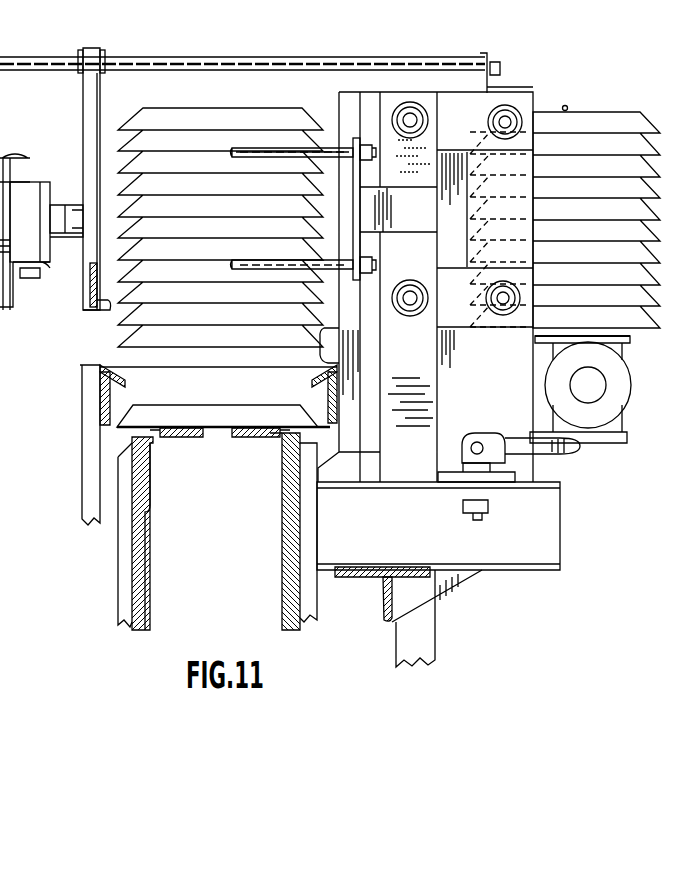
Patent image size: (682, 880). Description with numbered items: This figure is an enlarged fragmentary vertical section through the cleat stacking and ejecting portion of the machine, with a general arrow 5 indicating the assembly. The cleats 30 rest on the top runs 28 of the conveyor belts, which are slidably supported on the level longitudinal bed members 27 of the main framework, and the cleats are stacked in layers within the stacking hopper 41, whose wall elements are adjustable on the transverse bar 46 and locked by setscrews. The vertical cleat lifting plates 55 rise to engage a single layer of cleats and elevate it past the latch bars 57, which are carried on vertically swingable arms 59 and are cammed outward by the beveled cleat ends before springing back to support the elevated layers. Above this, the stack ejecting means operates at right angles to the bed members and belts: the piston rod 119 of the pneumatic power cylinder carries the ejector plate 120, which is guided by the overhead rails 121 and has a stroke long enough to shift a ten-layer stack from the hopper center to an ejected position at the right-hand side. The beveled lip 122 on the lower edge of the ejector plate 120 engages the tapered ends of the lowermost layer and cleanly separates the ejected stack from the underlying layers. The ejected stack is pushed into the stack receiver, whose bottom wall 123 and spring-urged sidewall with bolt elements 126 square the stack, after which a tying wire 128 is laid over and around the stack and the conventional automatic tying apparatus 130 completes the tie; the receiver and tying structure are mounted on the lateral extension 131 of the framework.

The fin assembly 5 is at (131, 101).
The overhead rails 121 is at (233, 62).
The stacking hopper 41 is at (308, 104).
The ejector plate 120 is at (90, 105).
The cleats 30 is at (182, 86).
The transverse bar 46 is at (270, 147).
The piston rod 119 is at (60, 205).
The beveled lip 122 is at (107, 310).
The latch bars 57 is at (105, 378).
The top runs of conveyor belts 28 is at (178, 428).
The bed members 27 is at (230, 437).
The vertically swingable arms 59 is at (87, 488).
The cleat lifting plates 55 is at (142, 540).
The bolt elements 126 is at (508, 118).
The tying wire 128 is at (566, 106).
The bottom wall 123 is at (545, 340).
The automatic tying apparatus 130 is at (605, 405).
The lateral extension 131 is at (497, 555).